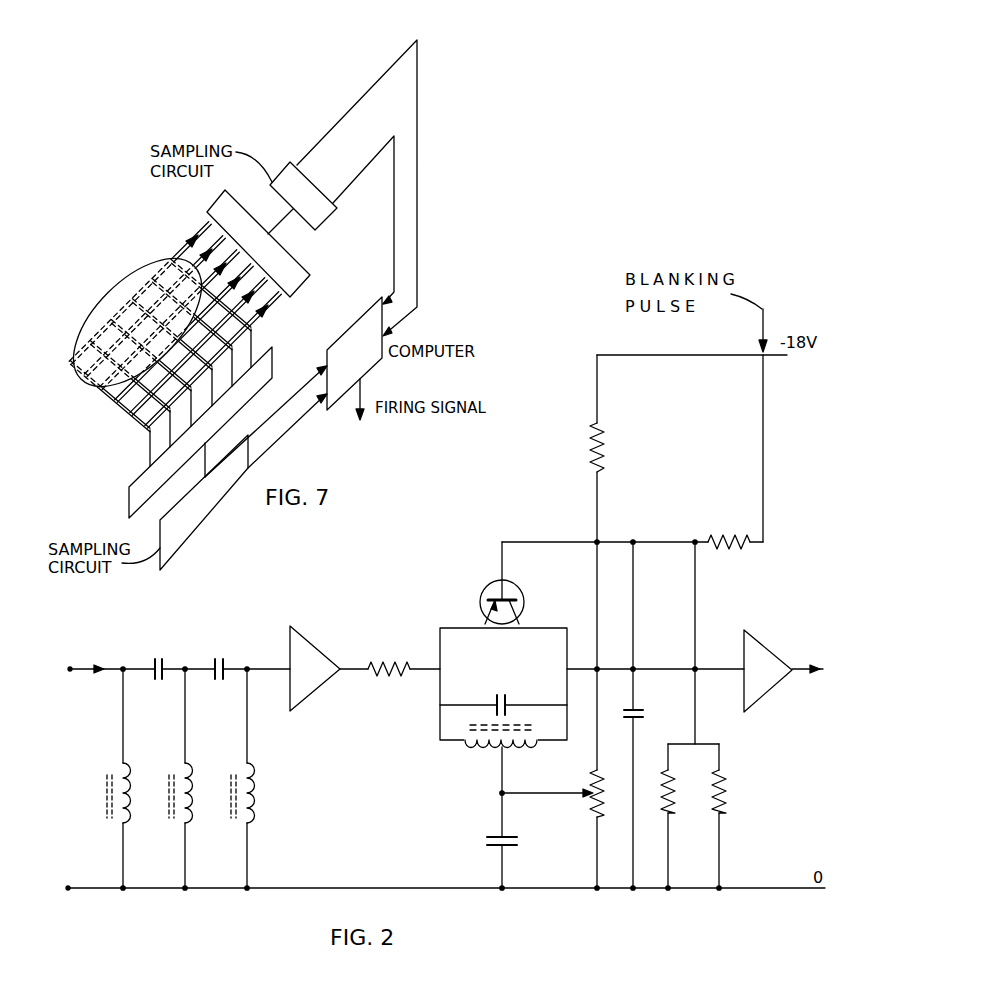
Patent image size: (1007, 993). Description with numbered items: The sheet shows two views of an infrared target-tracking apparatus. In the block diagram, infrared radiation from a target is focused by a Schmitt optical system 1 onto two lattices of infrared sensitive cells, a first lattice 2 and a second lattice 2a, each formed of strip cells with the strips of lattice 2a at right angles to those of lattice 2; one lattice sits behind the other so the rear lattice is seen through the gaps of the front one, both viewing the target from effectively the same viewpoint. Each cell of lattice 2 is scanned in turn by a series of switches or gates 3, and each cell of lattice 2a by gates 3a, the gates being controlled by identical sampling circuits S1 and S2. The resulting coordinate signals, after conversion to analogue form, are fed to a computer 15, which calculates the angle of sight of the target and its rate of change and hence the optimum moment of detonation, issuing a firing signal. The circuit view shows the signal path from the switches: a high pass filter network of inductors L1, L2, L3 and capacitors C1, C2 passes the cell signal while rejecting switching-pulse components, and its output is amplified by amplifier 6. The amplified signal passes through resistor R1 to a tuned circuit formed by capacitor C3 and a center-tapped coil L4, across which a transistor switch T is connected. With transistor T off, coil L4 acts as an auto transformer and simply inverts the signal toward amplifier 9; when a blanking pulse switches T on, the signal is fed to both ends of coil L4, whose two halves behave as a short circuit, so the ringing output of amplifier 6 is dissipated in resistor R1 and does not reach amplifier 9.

In FIG. 7, the Schmitt optical system 1 is at (96, 316).
In FIG. 7, the lattice of infrared sensitive cells 2 is at (141, 429).
In FIG. 7, the lattice of infrared sensitive cells 2a is at (174, 258).
In FIG. 7, the switches or gates 3 is at (200, 432).
In FIG. 2, the switches or gates 3 is at (85, 704).
In FIG. 7, the switches or gates 3a is at (258, 243).
In FIG. 7, the computer 15 is at (311, 258).
In FIG. 7, the sampling circuit S1 is at (204, 502).
In FIG. 7, the sampling circuit S2 is at (303, 196).
In FIG. 2, the capacitor C1 is at (156, 656).
In FIG. 2, the capacitor C2 is at (216, 656).
In FIG. 2, the capacitor C3 is at (502, 694).
In FIG. 2, the inductor L1 is at (121, 824).
In FIG. 2, the inductor L2 is at (183, 824).
In FIG. 2, the inductor L3 is at (245, 824).
In FIG. 2, the coil L4 is at (501, 748).
In FIG. 2, the resistor R1 is at (390, 656).
In FIG. 2, the transistor switch T is at (518, 587).
In FIG. 2, the amplifier 6 is at (315, 668).
In FIG. 2, the amplifier 9 is at (783, 671).